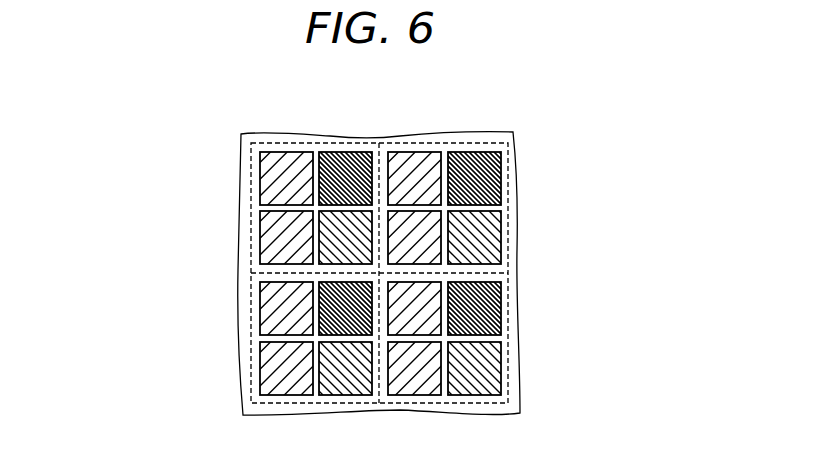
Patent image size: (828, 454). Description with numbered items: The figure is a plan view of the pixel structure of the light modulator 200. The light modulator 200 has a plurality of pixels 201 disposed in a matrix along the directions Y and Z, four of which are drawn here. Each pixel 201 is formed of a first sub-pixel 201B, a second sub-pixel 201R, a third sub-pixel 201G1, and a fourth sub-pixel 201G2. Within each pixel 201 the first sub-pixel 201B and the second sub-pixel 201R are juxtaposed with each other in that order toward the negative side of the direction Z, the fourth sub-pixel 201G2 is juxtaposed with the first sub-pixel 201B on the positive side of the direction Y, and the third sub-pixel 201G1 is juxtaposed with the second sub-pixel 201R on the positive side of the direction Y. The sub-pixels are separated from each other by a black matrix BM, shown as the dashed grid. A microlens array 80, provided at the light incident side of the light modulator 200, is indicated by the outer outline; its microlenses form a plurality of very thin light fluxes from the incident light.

The light modulator 200 is at (566, 137).
The pixel 201 is at (138, 155).
The fourth sub-pixel 201G2 is at (277, 177).
The third sub-pixel 201G1 is at (270, 221).
The first sub-pixel 201B is at (330, 248).
The second sub-pixel 201R is at (337, 202).
The black matrix BM is at (444, 160).
The microlens array 80 is at (508, 380).